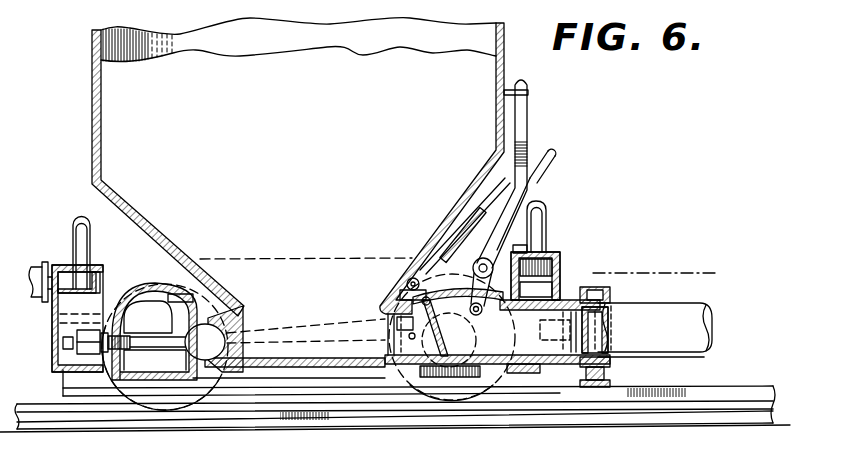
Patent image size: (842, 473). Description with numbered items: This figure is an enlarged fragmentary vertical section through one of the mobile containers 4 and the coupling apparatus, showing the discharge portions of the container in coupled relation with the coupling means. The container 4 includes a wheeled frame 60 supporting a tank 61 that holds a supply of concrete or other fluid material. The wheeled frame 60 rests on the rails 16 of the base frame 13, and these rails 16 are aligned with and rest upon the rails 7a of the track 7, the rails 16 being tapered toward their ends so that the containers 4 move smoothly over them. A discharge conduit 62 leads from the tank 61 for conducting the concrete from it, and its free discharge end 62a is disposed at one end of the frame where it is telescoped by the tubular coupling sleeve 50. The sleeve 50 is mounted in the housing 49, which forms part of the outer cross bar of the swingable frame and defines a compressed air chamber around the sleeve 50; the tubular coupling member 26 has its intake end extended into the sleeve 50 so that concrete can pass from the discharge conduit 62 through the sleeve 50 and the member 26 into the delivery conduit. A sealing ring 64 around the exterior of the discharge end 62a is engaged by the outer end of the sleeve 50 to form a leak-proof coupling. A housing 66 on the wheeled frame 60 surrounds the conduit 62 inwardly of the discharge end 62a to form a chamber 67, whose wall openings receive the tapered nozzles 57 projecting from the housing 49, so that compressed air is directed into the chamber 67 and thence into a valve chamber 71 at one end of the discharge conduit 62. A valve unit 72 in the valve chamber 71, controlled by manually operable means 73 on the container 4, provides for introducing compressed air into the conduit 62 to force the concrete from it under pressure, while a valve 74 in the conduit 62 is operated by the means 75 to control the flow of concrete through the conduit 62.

The mobile container 4 is at (66, 60).
The tank 61 is at (98, 134).
The valve operating means 75 is at (538, 188).
The chamber 67 is at (539, 290).
The tapered nozzles 57 is at (564, 307).
The tubular coupling sleeve 50 is at (604, 297).
The housing 49 is at (597, 272).
The tubular coupling member 26 is at (657, 307).
The base frame 13 is at (623, 328).
The valve unit 72 is at (240, 328).
The manually operable means 73 is at (66, 352).
The valve chamber 71 is at (167, 360).
The wheeled frame 60 is at (268, 384).
The discharge conduit 62 is at (345, 368).
The valve 74 is at (431, 349).
The housing 66 is at (513, 364).
The discharge end 62a is at (543, 362).
The sealing ring 64 is at (578, 366).
The rails 16 is at (650, 386).
The track rails 7a is at (707, 403).
The track 7 is at (50, 326).